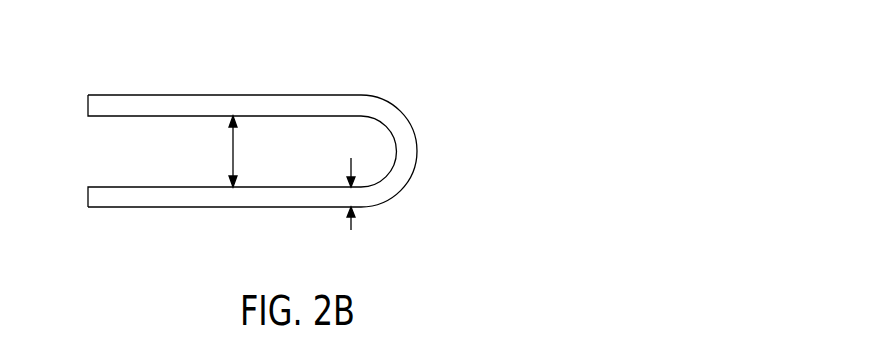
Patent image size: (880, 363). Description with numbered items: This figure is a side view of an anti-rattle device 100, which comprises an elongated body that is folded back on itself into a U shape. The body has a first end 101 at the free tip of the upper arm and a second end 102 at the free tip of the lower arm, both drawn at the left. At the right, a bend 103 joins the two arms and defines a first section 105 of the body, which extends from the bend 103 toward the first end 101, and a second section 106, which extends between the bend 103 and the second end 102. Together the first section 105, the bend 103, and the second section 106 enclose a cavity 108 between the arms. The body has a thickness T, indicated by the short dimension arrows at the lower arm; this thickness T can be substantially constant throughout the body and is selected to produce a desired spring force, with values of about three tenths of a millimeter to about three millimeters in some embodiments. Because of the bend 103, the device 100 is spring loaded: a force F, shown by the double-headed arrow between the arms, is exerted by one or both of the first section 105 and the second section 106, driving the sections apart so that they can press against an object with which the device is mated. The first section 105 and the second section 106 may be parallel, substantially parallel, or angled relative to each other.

The anti-rattle device 100 is at (297, 132).
The first end 101 is at (198, 79).
The second end 102 is at (198, 215).
The bend 103 is at (382, 124).
The first section 105 is at (225, 102).
The second section 106 is at (300, 200).
The cavity 108 is at (321, 134).
The force F is at (233, 150).
The thickness T is at (351, 230).